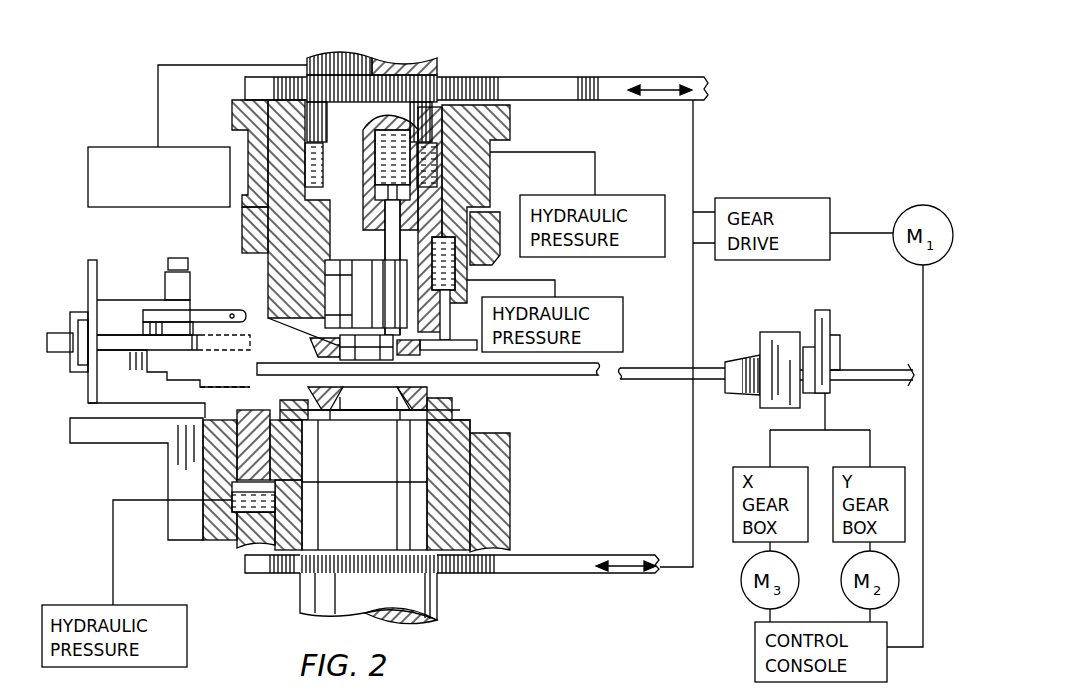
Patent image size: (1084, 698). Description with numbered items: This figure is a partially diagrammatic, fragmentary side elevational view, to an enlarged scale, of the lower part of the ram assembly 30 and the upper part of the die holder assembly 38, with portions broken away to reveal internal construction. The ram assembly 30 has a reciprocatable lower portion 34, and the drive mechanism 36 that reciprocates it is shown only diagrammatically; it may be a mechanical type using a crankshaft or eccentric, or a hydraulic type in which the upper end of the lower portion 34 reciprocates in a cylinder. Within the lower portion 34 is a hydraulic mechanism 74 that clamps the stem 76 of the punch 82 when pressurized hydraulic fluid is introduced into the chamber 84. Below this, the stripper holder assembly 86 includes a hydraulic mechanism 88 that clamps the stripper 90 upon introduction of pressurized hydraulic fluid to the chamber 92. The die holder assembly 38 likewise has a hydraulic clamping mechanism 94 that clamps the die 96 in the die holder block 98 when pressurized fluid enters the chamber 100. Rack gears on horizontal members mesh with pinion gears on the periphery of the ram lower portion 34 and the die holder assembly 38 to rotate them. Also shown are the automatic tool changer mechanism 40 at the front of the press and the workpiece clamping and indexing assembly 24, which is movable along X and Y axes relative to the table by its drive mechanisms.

The workpiece clamping and indexing assembly 24 is at (850, 338).
The ram assembly 30 is at (278, 148).
The lower portion of the ram assembly 34 is at (335, 222).
The drive mechanism 36 is at (143, 158).
The die holder assembly 38 is at (395, 505).
The automatic tool changer mechanism 40 is at (118, 320).
The hydraulic mechanism 74 is at (388, 235).
The stem 76 is at (362, 308).
The punch 82 is at (338, 355).
The chamber 84 is at (385, 160).
The stripper holder assembly 86 is at (445, 330).
The hydraulic mechanism 88 is at (455, 302).
The stripper 90 is at (312, 346).
The chamber 92 is at (474, 220).
The hydraulic clamping mechanism 94 is at (245, 450).
The die 96 is at (419, 394).
The die holder block 98 is at (453, 412).
The chamber 100 is at (250, 505).